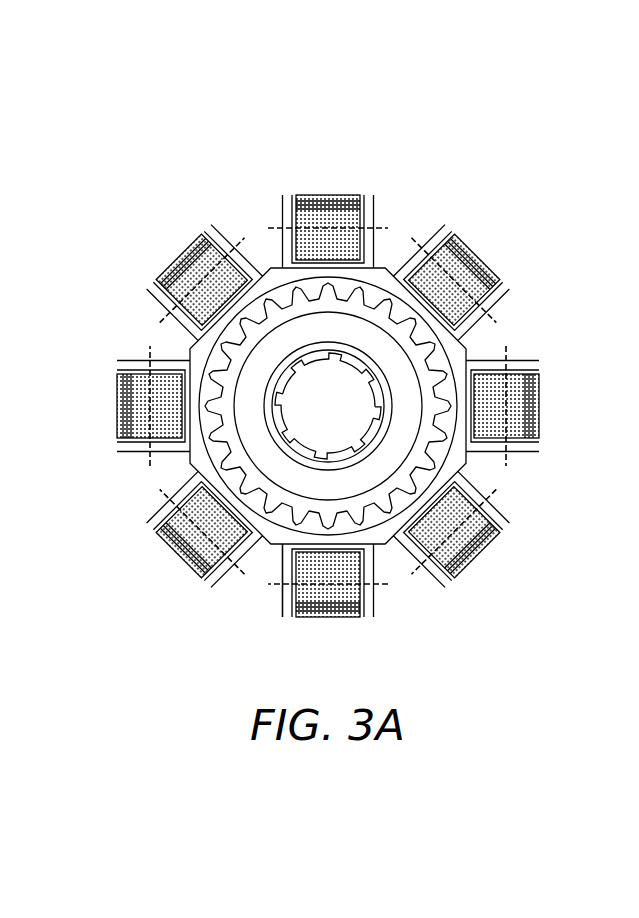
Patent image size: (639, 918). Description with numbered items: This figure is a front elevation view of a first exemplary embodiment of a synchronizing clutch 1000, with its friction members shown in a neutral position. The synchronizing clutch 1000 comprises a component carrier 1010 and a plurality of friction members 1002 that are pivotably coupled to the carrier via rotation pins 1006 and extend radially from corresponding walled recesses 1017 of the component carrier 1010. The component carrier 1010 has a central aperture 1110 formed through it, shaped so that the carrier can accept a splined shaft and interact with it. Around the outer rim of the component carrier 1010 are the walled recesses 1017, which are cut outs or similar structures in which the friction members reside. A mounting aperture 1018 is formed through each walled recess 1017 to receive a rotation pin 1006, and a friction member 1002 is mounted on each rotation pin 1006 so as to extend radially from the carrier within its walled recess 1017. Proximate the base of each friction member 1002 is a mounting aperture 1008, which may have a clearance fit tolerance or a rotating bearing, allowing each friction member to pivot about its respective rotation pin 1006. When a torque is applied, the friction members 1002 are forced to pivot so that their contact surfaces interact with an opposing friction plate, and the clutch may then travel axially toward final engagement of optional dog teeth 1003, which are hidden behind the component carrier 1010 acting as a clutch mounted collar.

The synchronizing clutch 1000 is at (241, 137).
The friction member 1002 is at (331, 191).
The dog teeth 1003 is at (447, 366).
The rotation pin 1006 is at (381, 589).
The mounting aperture 1008 is at (501, 385).
The component carrier 1010 is at (467, 464).
The walled recess 1017 is at (287, 603).
The mounting aperture 1018 is at (413, 239).
The central aperture 1110 is at (313, 390).